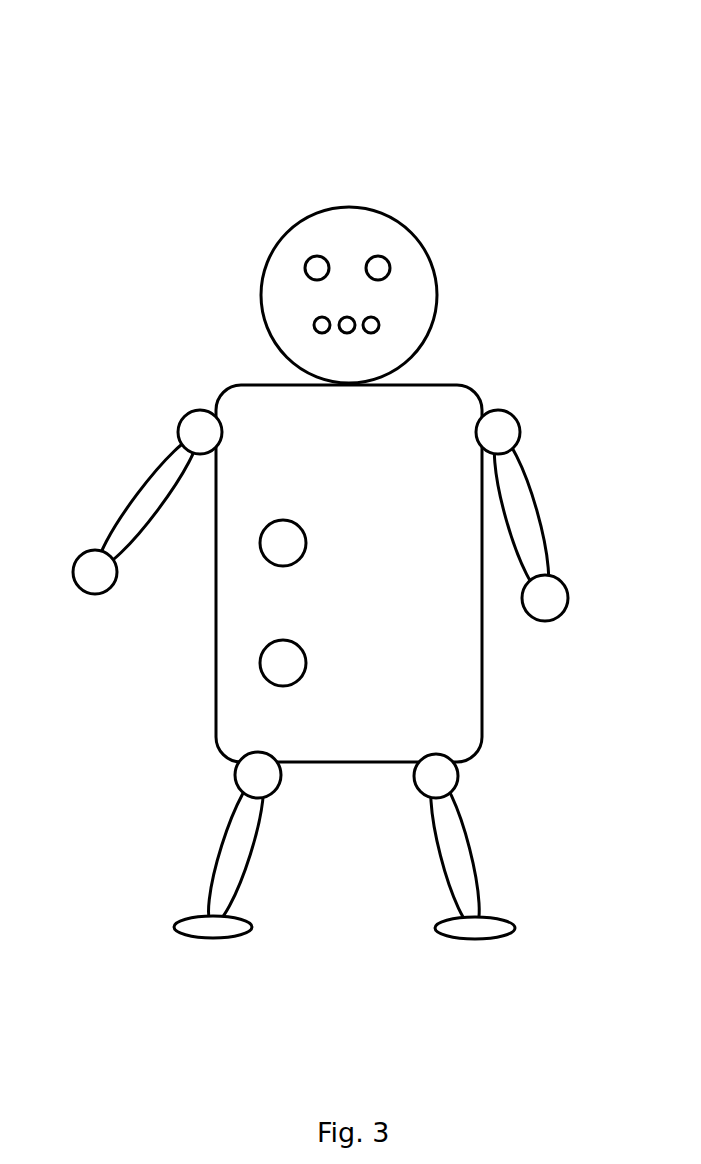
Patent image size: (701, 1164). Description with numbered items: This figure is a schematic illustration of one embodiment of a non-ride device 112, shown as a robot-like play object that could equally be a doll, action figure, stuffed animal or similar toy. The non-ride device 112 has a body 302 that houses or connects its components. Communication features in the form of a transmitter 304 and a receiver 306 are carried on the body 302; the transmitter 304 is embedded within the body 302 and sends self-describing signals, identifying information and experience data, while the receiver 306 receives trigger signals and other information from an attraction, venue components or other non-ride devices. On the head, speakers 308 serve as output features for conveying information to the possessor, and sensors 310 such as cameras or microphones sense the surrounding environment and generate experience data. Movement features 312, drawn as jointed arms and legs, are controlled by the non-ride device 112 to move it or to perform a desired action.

The non-ride device 112 is at (124, 97).
The body 302 is at (453, 385).
The transmitter 304 is at (306, 543).
The receiver 306 is at (306, 670).
The speakers 308 is at (384, 331).
The sensors 310 is at (392, 265).
The movement features 312 is at (543, 498).